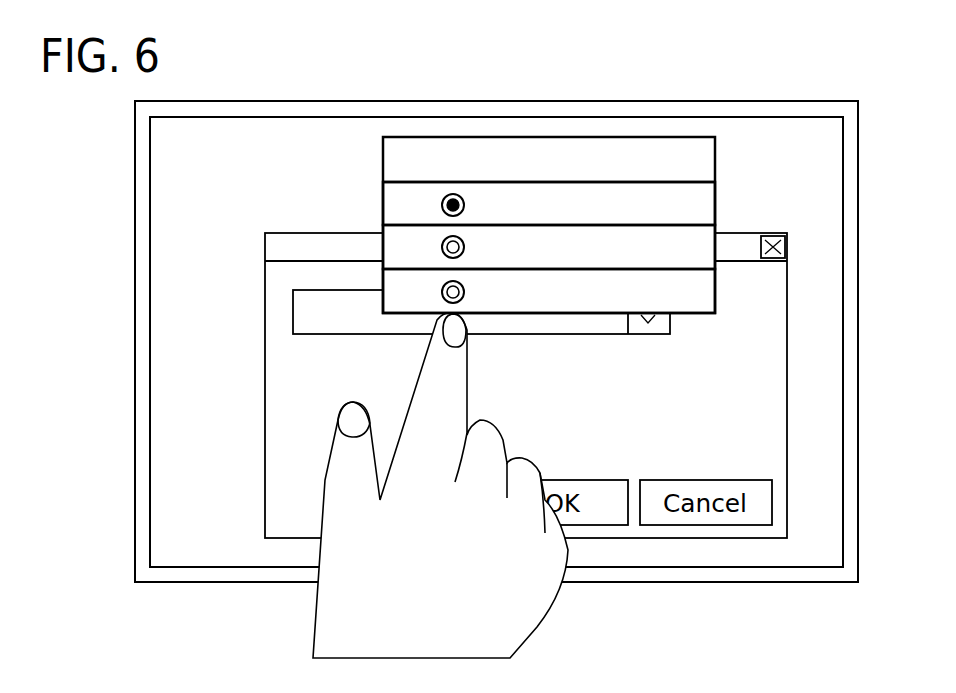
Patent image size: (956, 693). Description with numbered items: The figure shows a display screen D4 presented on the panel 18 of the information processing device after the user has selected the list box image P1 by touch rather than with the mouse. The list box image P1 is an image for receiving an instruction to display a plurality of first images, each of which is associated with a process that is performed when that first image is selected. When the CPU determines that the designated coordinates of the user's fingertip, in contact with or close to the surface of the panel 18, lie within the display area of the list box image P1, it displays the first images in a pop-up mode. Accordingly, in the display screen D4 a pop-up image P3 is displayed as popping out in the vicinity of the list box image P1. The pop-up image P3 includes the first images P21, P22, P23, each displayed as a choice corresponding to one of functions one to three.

The panel 18 is at (747, 82).
The display screen D4 is at (810, 128).
The list box image P1 is at (293, 313).
The pop-up image P3 is at (381, 183).
The first image P21 is at (405, 202).
The first image P22 is at (403, 243).
The first image P23 is at (403, 280).